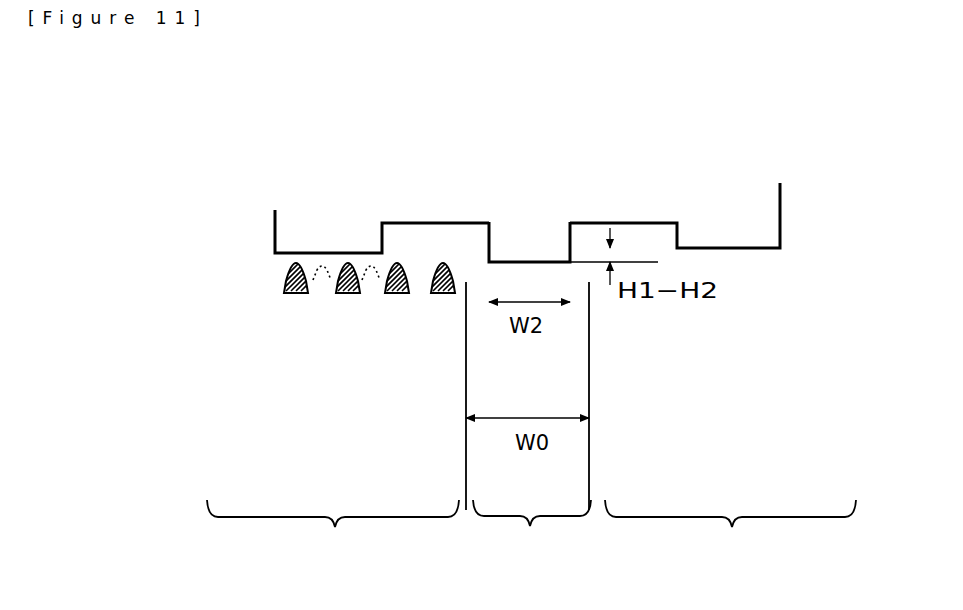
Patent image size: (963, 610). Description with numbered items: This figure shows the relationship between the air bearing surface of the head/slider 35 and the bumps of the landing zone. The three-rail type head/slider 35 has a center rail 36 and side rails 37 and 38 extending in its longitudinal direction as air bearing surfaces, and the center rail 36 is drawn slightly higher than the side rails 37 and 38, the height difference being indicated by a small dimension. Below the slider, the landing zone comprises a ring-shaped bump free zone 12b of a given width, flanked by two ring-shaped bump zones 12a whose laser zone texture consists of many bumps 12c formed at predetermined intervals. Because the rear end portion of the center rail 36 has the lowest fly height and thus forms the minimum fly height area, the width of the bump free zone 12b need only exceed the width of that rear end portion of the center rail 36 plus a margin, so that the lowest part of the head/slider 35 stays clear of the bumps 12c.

The head/slider 35 is at (575, 112).
The center rail 36 is at (532, 261).
The side rail 37 is at (326, 252).
The side rail 38 is at (720, 247).
The bump zone 12a is at (531, 531).
The bump free zone 12b is at (528, 422).
The bump 12c is at (344, 290).